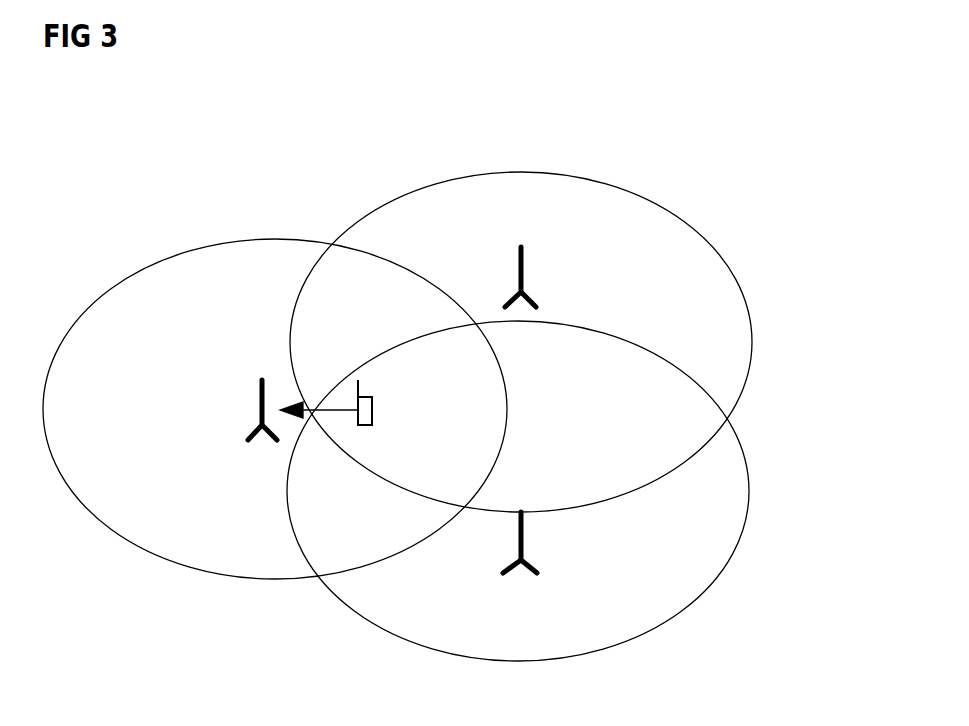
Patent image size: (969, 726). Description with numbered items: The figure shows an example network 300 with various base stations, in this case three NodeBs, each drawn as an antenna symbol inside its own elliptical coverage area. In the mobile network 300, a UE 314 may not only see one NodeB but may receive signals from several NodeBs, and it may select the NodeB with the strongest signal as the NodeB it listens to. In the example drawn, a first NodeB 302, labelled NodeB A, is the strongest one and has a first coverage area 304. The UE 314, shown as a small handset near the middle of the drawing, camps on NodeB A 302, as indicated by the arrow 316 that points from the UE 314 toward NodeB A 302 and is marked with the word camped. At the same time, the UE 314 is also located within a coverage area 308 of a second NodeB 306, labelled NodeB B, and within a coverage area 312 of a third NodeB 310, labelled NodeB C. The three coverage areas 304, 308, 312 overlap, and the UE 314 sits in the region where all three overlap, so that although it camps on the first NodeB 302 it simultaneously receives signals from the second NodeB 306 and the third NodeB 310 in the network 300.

The network 300 is at (429, 358).
The first NodeB 302 is at (257, 404).
The first coverage area 304 is at (235, 240).
The second NodeB 306 is at (525, 290).
The coverage area of second NodeB 308 is at (568, 173).
The third NodeB 310 is at (513, 550).
The coverage area of third NodeB 312 is at (747, 468).
The UE 314 is at (373, 427).
The arrow 316 is at (310, 382).